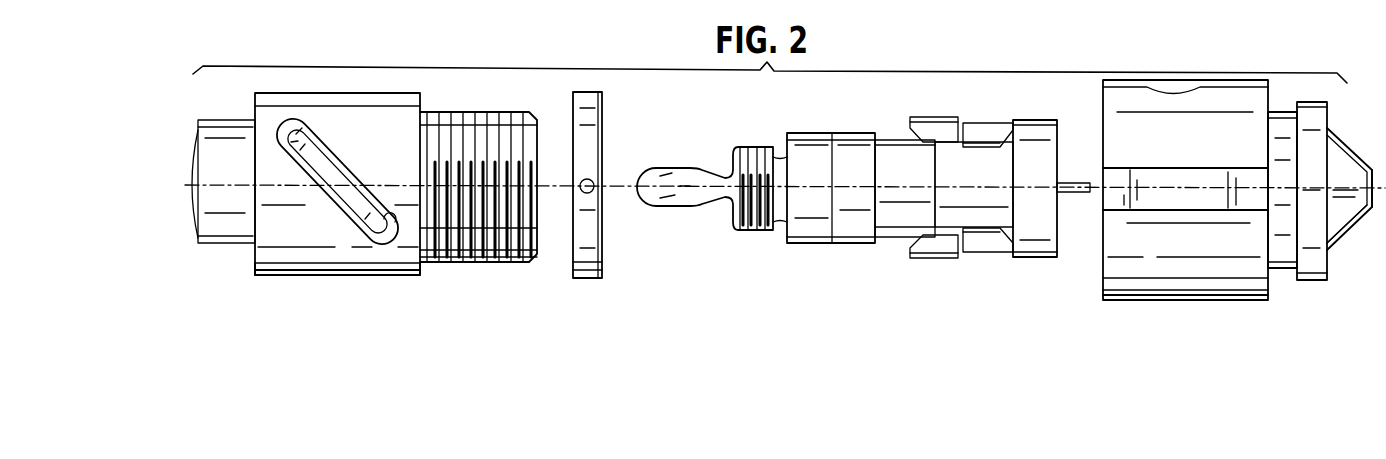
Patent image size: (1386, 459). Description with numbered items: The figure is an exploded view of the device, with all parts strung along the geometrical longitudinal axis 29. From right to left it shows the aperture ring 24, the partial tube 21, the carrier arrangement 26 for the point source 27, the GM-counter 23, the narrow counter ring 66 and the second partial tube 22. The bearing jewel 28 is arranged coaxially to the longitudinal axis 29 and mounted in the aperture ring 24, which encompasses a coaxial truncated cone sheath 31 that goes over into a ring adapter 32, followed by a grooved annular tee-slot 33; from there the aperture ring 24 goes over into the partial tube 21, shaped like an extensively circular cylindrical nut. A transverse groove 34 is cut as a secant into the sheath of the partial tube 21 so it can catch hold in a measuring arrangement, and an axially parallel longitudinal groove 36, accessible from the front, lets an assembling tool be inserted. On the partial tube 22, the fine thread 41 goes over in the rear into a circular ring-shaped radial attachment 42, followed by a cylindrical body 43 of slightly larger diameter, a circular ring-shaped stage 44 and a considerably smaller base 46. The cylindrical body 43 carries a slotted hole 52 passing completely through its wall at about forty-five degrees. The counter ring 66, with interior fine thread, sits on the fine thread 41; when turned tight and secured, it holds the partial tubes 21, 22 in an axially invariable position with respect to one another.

The partial tube 21 is at (1168, 209).
The second partial tube 22 is at (362, 199).
The GM-counter 23 is at (852, 123).
The aperture ring 24 is at (1353, 145).
The carrier arrangement 26 is at (1035, 118).
The point source 27 is at (1078, 193).
The bearing jewel 28 is at (1368, 213).
The geometrical longitudinal axis 29 is at (627, 187).
The truncated cone sheath 31 is at (1332, 247).
The ring adapter 32 is at (1313, 280).
The grooved annular tee-slot 33 is at (1283, 270).
The transverse groove 34 is at (1187, 92).
The longitudinal groove 36 is at (1117, 170).
The fine thread 41 is at (510, 262).
The radial attachment 42 is at (423, 270).
The cylindrical body 43 is at (297, 277).
The circular ring-shaped stage 44 is at (255, 261).
The base 46 is at (239, 120).
The slotted hole 52 is at (347, 158).
The counter ring 66 is at (592, 122).